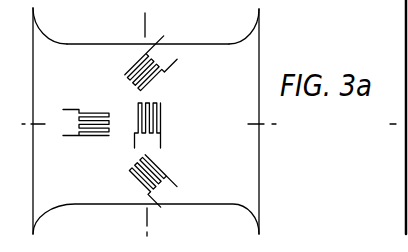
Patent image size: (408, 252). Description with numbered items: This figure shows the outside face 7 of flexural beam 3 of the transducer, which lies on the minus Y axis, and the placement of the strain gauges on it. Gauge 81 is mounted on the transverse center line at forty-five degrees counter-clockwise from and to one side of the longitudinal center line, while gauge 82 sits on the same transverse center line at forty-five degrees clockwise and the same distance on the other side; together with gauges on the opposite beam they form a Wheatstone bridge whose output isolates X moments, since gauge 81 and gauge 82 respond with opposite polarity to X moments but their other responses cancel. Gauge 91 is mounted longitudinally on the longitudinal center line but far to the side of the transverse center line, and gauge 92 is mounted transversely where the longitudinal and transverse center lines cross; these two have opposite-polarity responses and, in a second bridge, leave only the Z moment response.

The beam 3 is at (75, 44).
The outside face 7 is at (221, 78).
The gauge 81 is at (161, 78).
The gauge 82 is at (162, 173).
The gauge 91 is at (90, 109).
The gauge 92 is at (133, 124).